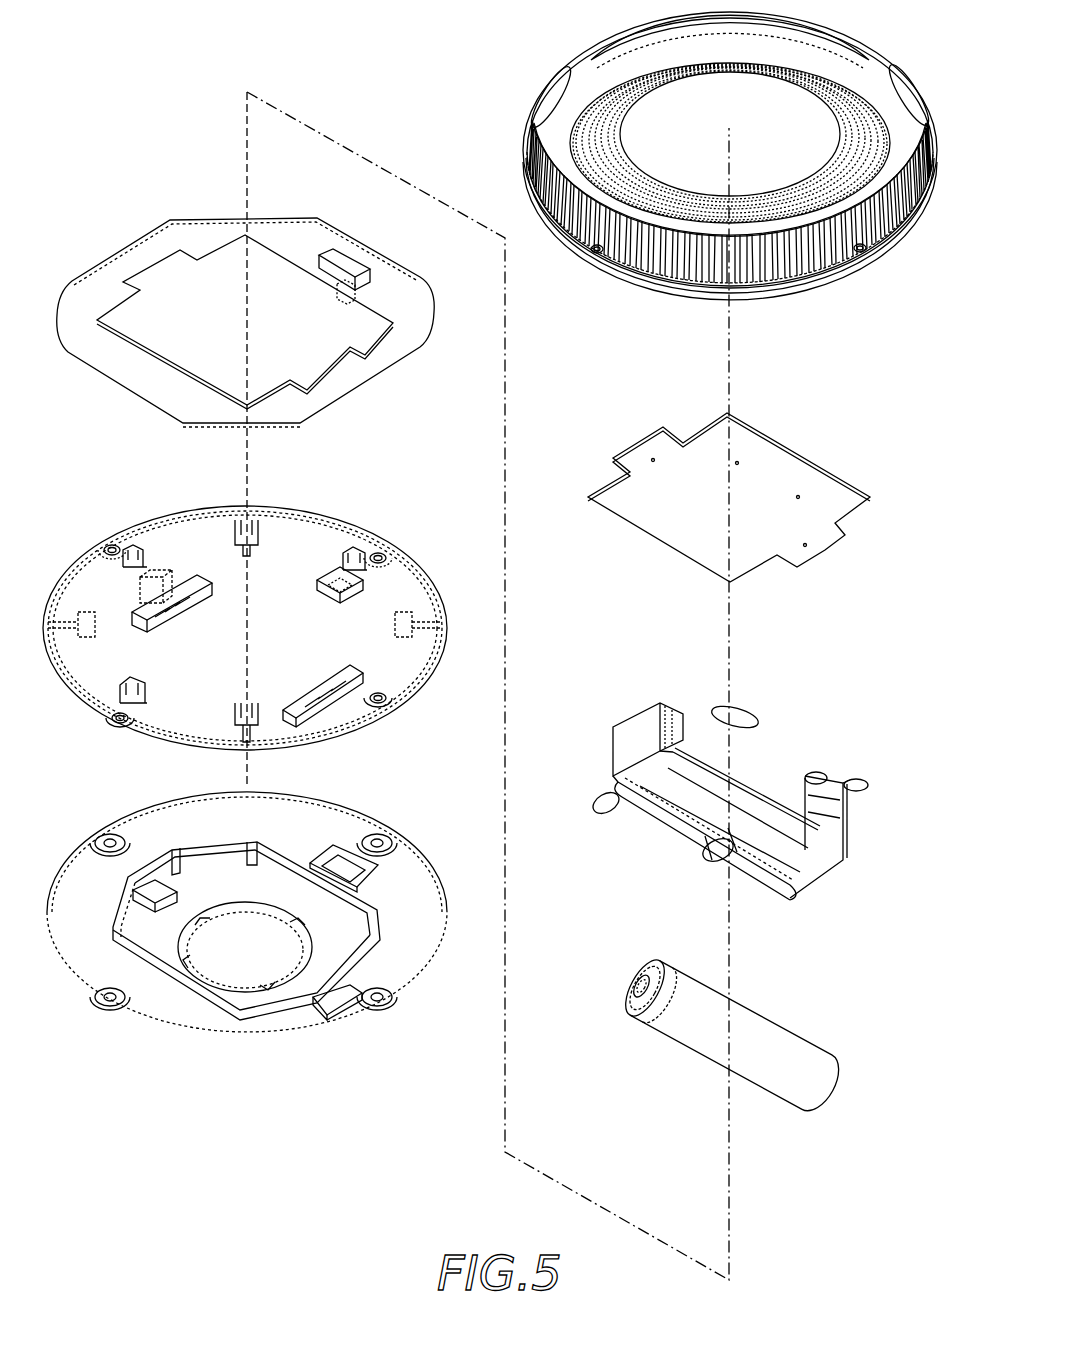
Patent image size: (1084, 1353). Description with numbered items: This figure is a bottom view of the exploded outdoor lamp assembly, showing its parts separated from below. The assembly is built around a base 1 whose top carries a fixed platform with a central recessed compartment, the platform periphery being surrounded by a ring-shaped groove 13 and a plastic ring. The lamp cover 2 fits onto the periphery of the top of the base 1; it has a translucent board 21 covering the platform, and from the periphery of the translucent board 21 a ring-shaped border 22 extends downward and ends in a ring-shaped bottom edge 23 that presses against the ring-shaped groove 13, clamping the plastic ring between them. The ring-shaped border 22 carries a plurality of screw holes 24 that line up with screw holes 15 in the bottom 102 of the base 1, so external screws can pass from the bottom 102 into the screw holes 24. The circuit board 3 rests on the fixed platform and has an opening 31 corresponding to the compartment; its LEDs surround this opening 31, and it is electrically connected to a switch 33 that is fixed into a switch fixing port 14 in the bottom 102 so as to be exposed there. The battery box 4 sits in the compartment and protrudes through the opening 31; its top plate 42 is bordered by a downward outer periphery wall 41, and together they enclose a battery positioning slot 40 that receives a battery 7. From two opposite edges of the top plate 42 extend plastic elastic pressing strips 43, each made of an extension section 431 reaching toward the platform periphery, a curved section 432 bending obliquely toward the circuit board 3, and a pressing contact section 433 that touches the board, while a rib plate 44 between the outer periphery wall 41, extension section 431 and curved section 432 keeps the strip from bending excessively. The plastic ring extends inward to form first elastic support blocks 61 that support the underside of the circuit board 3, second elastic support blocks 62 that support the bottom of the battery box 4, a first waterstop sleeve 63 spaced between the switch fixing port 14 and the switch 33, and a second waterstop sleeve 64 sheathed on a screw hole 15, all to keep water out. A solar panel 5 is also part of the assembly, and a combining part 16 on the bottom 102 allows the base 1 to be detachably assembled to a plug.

The base 1 is at (272, 940).
The bottom 102 is at (182, 1020).
The ring-shaped groove 13 is at (428, 578).
The switch fixing port 14 is at (355, 870).
The screw holes 15 is at (108, 838).
The combining part 16 is at (335, 1014).
The lamp cover 2 is at (697, 171).
The translucent board 21 is at (787, 140).
The ring-shaped border 22 is at (542, 130).
The ring-shaped bottom edge 23 is at (612, 280).
The screw holes 24 is at (592, 256).
The circuit board 3 is at (257, 342).
The opening 31 is at (197, 352).
The switch 33 is at (358, 270).
The solar panel 5 is at (655, 523).
The first elastic support blocks 61 is at (152, 550).
The second elastic support blocks 62 is at (170, 618).
The first waterstop sleeve 63 is at (330, 588).
The second waterstop sleeve 64 is at (118, 546).
The battery box 4 is at (761, 776).
The battery positioning slot 40 is at (763, 805).
The outer periphery wall 41 is at (765, 768).
The top plate 42 is at (660, 703).
The elastic pressing strip 43 is at (876, 785).
The extension section 431 is at (806, 774).
The curved section 432 is at (824, 795).
The pressing contact section 433 is at (865, 783).
The rib plate 44 is at (722, 727).
The battery 7 is at (628, 1007).